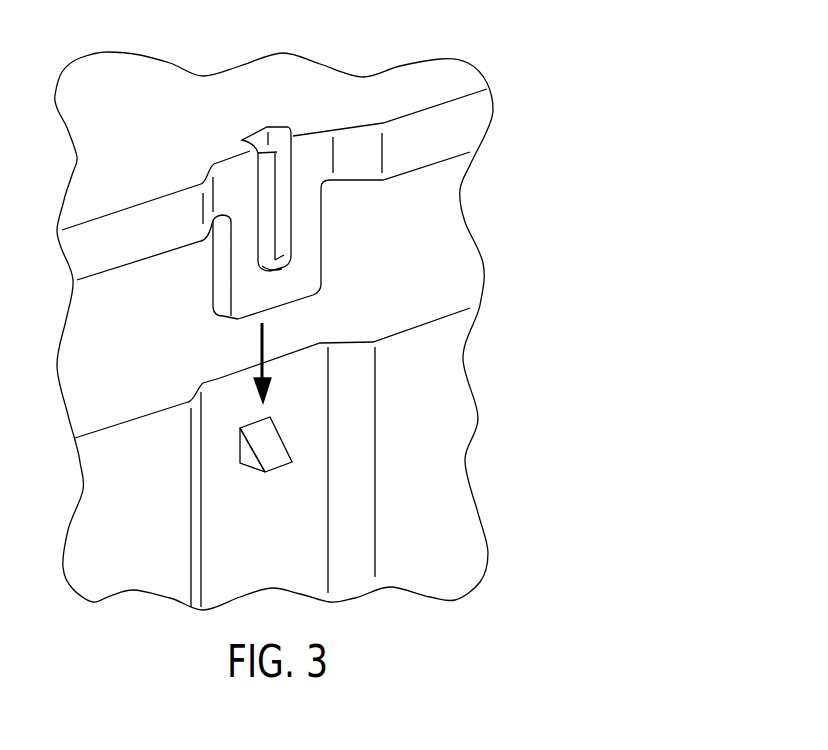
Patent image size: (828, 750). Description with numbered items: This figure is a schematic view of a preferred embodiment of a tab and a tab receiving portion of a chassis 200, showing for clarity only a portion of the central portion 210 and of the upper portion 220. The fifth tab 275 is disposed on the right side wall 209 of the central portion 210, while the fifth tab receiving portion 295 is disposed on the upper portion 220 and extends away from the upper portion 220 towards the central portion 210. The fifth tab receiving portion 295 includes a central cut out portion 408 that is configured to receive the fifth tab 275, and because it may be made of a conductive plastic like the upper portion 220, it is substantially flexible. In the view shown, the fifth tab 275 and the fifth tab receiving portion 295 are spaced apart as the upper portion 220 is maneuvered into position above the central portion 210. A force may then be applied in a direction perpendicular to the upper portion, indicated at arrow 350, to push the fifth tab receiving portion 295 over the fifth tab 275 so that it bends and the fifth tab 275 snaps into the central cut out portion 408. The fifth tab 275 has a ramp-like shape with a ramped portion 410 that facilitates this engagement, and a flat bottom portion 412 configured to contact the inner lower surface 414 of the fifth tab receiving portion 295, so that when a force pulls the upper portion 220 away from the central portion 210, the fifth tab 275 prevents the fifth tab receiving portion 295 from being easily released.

The chassis 200 is at (470, 62).
The upper portion 220 is at (159, 146).
The central portion 210 is at (453, 397).
The right side wall 209 is at (442, 539).
The fifth tab receiving portion 295 is at (333, 265).
The central cut out portion 408 is at (268, 187).
The inner lower surface 414 is at (273, 266).
The arrow 350 is at (259, 350).
The ramped portion 410 is at (268, 443).
The flat bottom portion 412 is at (277, 462).
The fifth tab 275 is at (270, 473).